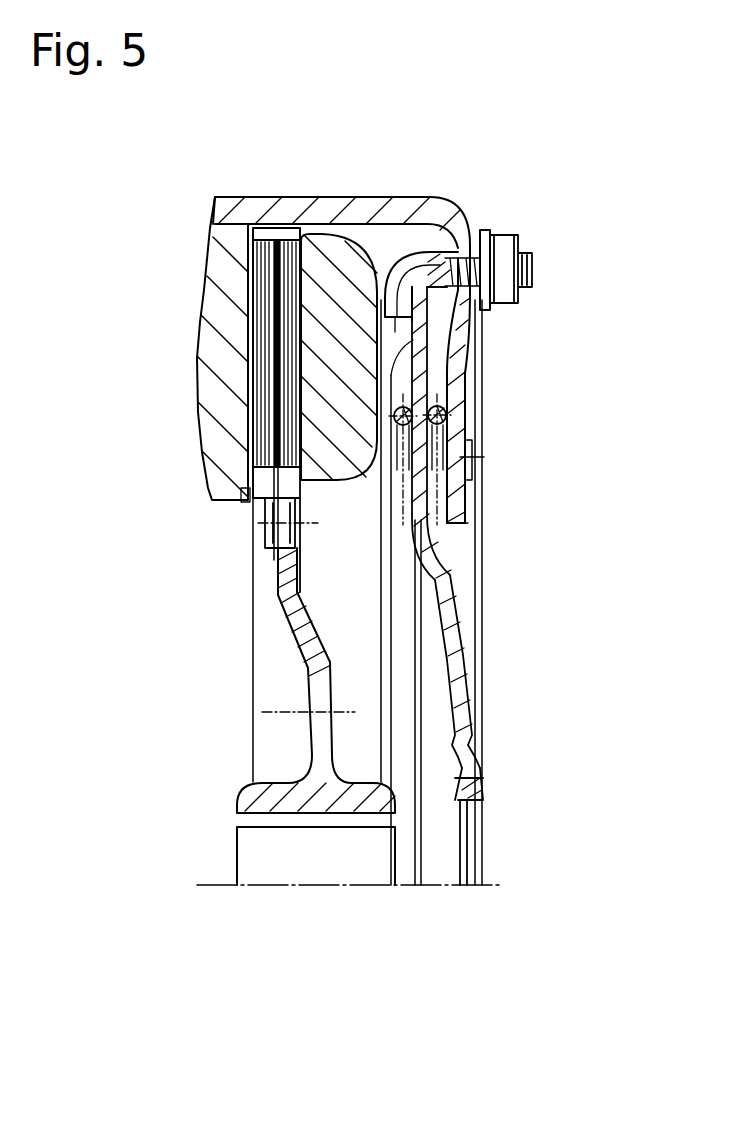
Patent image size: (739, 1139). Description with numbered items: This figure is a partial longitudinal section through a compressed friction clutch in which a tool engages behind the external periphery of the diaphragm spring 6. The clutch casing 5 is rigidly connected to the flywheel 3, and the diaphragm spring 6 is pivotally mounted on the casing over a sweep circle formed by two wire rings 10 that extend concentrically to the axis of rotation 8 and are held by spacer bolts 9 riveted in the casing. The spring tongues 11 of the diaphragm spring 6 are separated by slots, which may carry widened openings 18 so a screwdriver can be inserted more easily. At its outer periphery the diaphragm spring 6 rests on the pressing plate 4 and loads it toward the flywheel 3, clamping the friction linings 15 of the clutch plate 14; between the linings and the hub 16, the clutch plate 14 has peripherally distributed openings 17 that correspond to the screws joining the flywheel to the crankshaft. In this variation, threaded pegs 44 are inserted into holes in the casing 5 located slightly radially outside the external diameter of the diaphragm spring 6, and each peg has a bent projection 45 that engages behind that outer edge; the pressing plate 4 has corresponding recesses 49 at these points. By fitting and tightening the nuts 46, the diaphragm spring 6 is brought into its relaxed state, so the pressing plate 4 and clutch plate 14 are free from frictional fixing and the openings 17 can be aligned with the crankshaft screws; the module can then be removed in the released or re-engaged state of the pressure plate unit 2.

The pressure plate unit 2 is at (524, 168).
The flywheel 3 is at (222, 270).
The pressing plate 4 is at (345, 270).
The clutch casing 5 is at (432, 212).
The diaphragm spring 6 is at (440, 355).
The axis of rotation 8 is at (208, 887).
The spacer bolts 9 is at (484, 452).
The wire rings 10 is at (445, 412).
The spring tongues 11 is at (442, 578).
The clutch plate 14 is at (283, 565).
The friction linings 15 is at (280, 240).
The hub 16 is at (262, 800).
The openings 17 is at (318, 670).
The openings 18 is at (470, 716).
The threaded pegs 44 is at (488, 262).
The bent projection 45 is at (478, 252).
The nuts 46 is at (512, 282).
The recesses 49 is at (430, 340).